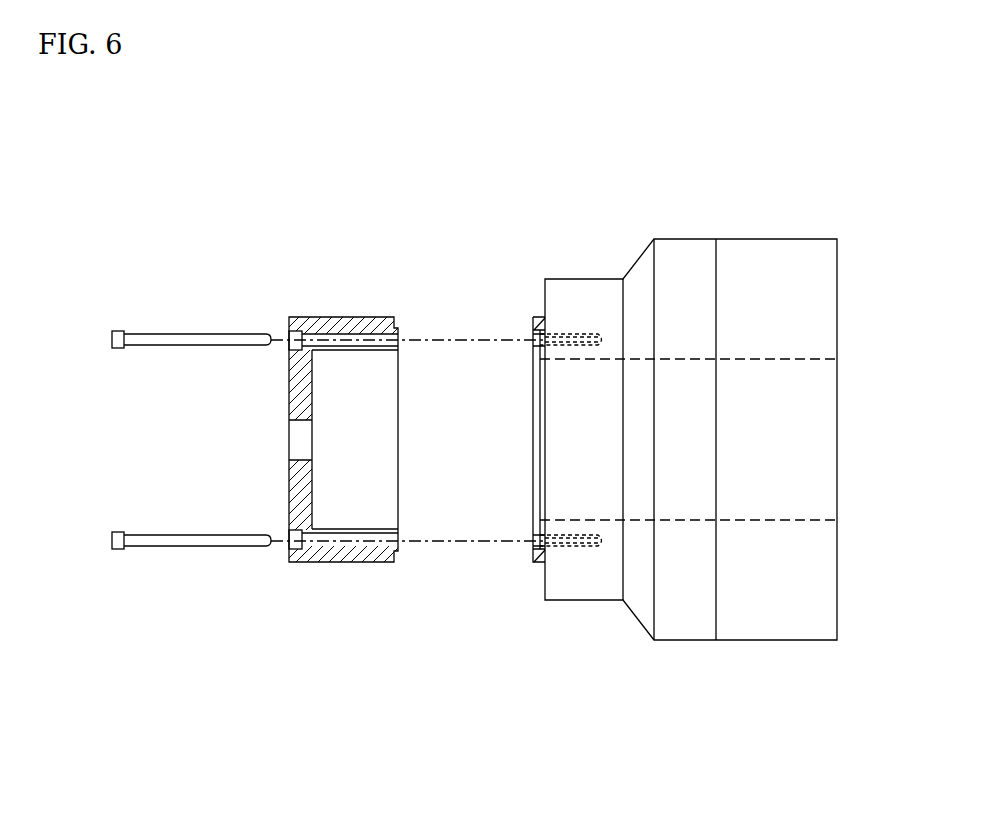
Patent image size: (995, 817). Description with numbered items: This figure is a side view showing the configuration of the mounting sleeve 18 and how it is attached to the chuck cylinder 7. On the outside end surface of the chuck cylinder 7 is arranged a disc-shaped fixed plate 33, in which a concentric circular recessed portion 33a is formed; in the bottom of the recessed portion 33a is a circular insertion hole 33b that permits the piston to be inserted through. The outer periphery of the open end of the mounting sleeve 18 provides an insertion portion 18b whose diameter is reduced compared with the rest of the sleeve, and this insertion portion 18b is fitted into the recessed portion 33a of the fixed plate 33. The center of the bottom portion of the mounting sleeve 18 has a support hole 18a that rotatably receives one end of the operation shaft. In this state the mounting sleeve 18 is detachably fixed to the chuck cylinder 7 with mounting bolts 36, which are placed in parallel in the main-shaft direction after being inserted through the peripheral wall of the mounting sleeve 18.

The chuck cylinder 7 is at (743, 641).
The mounting sleeve 18 is at (346, 577).
The support hole 18a is at (303, 421).
The insertion portion 18b is at (398, 328).
The fixed plate 33 is at (541, 567).
The recessed portion 33a is at (541, 352).
The insertion hole 33b is at (541, 353).
The mounting bolt 36 is at (174, 334).